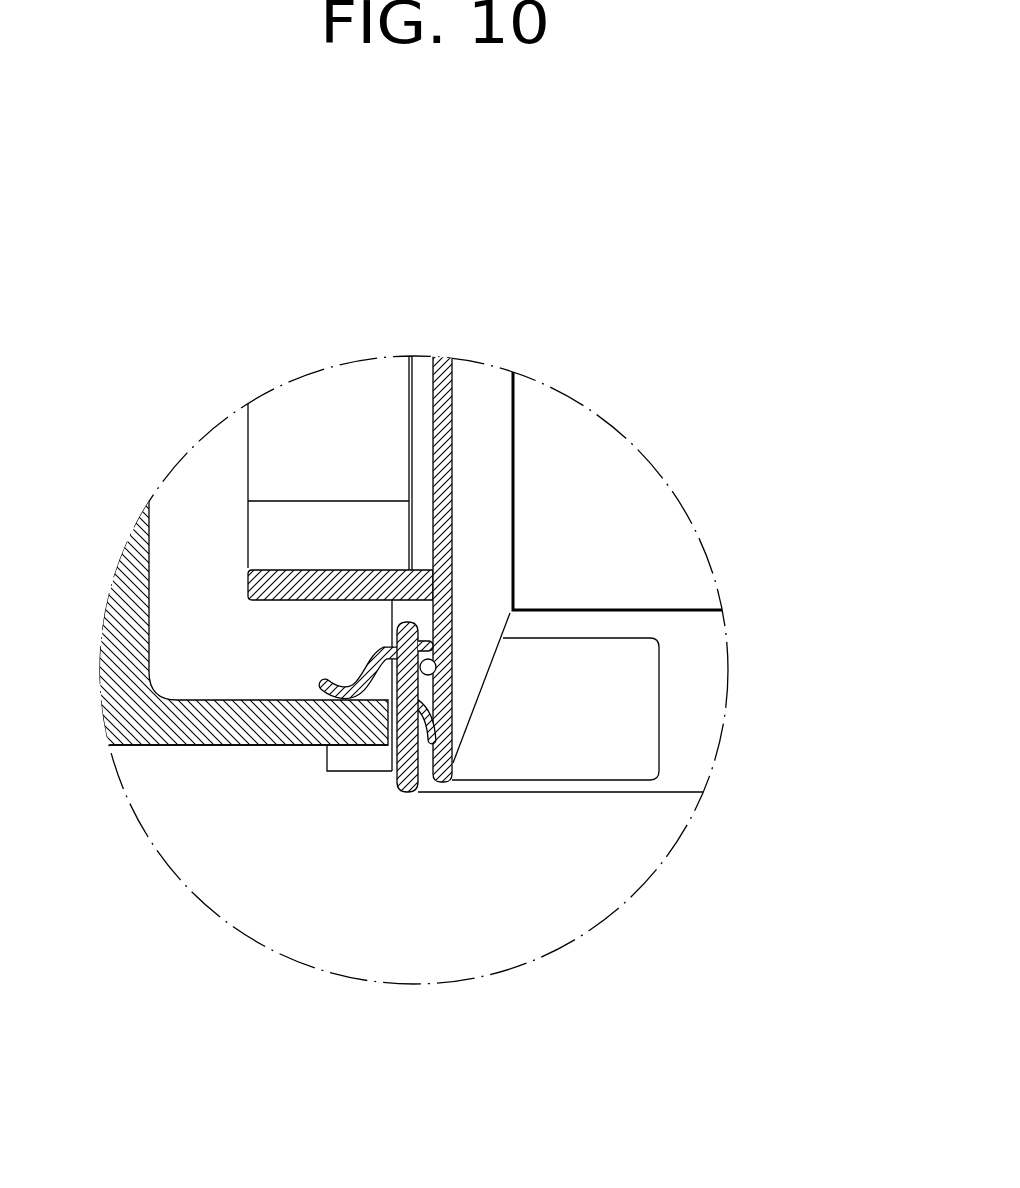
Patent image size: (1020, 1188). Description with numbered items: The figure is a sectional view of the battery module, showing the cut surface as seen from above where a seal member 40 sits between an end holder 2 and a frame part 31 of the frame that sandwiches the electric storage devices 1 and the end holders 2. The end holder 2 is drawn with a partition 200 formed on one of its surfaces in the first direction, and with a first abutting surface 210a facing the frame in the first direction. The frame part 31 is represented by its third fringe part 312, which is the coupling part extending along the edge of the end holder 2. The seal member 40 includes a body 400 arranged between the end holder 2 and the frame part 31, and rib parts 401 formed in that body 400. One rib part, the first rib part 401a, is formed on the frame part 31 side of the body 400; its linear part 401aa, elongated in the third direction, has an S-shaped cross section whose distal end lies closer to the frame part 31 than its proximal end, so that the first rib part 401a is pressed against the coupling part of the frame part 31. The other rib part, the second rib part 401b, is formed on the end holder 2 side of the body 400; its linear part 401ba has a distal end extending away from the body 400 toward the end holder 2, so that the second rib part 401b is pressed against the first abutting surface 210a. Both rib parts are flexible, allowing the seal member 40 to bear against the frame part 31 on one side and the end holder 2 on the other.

The electric storage device 1 is at (698, 621).
The end holder 2 is at (467, 392).
The partition 200 is at (267, 590).
The first abutting surface 210a is at (432, 662).
The frame part 31 is at (226, 712).
The third fringe part 312 is at (251, 846).
The seal member 40 is at (458, 886).
The body 400 is at (410, 680).
The rib part 401 is at (424, 879).
The first rib part 401a is at (382, 700).
The linear part 401aa is at (339, 852).
The second rib part 401b is at (425, 745).
The linear part 401ba is at (492, 877).